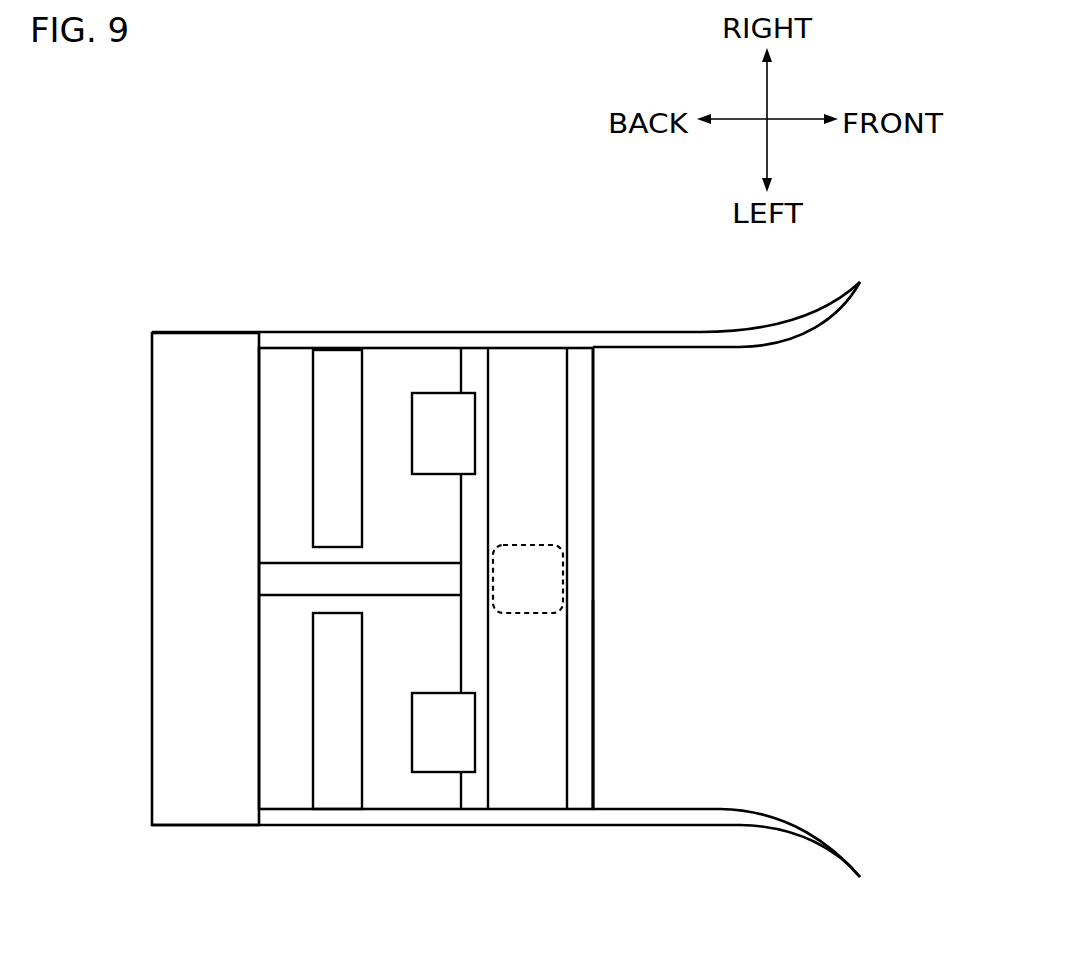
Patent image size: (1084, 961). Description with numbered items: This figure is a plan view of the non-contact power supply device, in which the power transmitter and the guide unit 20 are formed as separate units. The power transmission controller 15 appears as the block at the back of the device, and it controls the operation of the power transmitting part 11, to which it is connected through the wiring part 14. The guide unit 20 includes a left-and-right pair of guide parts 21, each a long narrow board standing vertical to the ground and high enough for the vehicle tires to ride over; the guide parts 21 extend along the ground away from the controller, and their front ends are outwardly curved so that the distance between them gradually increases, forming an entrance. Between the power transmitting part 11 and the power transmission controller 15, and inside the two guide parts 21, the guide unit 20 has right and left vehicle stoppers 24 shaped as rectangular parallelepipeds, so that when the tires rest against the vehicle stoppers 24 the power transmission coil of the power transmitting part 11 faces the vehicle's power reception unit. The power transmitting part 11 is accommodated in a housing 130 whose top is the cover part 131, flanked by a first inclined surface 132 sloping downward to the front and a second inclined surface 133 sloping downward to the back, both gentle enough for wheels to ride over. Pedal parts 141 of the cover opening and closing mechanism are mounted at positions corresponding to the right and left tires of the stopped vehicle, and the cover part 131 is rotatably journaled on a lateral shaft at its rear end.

The power transmitting part 11 is at (572, 569).
The wiring part 14 is at (392, 587).
The power transmission controller 15 is at (196, 318).
The guide unit 20 is at (507, 841).
The guide part 21 is at (658, 340).
The vehicle stopper 24 is at (338, 358).
The housing 130 is at (598, 693).
The cover part 131 is at (549, 415).
The first inclined surface 132 is at (580, 473).
The second inclined surface 133 is at (470, 506).
The pedal part 141 is at (427, 405).